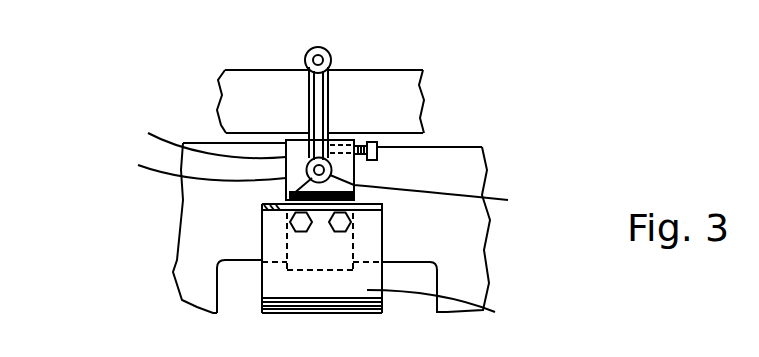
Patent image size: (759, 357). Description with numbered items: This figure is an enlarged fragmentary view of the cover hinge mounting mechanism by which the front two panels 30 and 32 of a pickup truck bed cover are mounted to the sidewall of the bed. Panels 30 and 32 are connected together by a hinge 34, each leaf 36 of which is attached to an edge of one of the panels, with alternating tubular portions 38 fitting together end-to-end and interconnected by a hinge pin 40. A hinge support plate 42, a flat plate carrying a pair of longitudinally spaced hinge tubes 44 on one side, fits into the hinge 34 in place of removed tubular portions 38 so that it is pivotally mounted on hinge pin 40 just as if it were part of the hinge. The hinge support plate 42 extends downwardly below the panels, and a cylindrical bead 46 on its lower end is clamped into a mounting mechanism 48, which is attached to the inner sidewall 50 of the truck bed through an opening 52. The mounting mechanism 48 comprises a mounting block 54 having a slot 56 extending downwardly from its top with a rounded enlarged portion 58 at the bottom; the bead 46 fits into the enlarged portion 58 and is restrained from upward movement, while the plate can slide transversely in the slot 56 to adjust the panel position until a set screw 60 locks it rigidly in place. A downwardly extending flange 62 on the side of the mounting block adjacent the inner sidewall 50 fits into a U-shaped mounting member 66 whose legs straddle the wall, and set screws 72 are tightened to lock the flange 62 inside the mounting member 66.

The front panel 30 is at (252, 90).
The front panel 32 is at (387, 88).
The hinge 34 is at (330, 42).
The hinge leaf 36 is at (300, 97).
The tubular portions 38 is at (330, 53).
The hinge pin 40 is at (315, 48).
The hinge support plate 42 is at (332, 112).
The hinge tubes 44 is at (313, 50).
The bead 46 is at (421, 186).
The mounting mechanism 48 is at (226, 211).
The inner sidewall 50 is at (452, 217).
The opening 52 is at (415, 277).
The mounting block 54 is at (308, 172).
The slot 56 is at (300, 156).
The enlarged portion 58 is at (262, 220).
The set screw 60 is at (377, 158).
The flange 62 is at (383, 252).
The U-shaped mounting member 66 is at (444, 307).
The set screws 72 is at (287, 225).